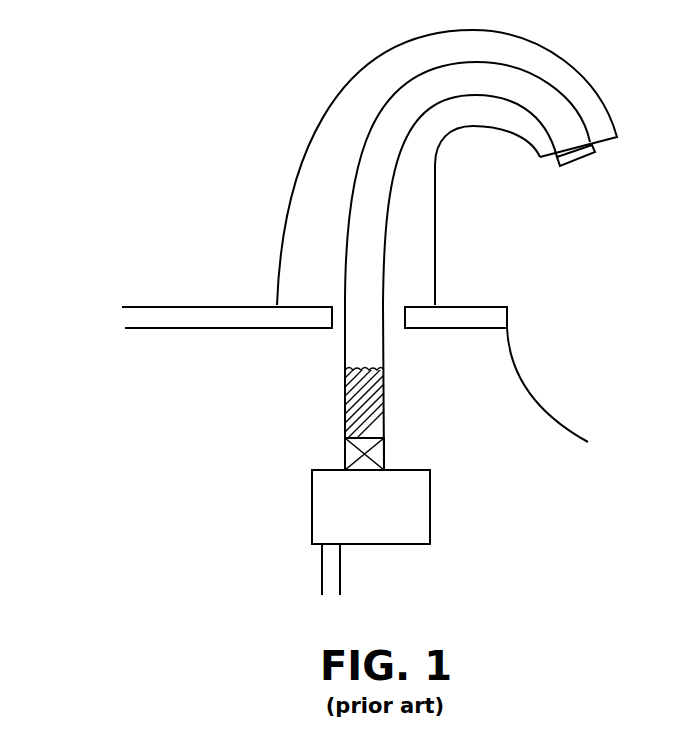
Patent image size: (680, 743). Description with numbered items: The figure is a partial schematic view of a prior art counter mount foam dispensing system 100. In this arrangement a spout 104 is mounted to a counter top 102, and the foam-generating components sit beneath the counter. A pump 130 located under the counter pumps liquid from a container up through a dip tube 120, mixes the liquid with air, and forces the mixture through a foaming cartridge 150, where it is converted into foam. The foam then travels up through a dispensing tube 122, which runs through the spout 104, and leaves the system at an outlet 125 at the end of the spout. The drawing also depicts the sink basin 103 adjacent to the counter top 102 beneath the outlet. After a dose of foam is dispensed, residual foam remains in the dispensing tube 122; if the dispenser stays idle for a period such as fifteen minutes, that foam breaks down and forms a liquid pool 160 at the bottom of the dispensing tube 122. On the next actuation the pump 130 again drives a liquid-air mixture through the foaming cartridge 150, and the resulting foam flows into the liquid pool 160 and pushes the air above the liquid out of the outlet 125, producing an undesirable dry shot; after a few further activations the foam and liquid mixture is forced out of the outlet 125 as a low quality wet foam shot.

The counter mount foam dispensing system 100 is at (92, 235).
The counter top 102 is at (242, 303).
The sink basin 103 is at (522, 390).
The spout 104 is at (355, 74).
The dip tube 120 is at (340, 577).
The dispensing tube 122 is at (350, 166).
The outlet 125 is at (583, 160).
The pump 130 is at (430, 512).
The foaming cartridge 150 is at (387, 452).
The liquid pool 160 is at (387, 397).